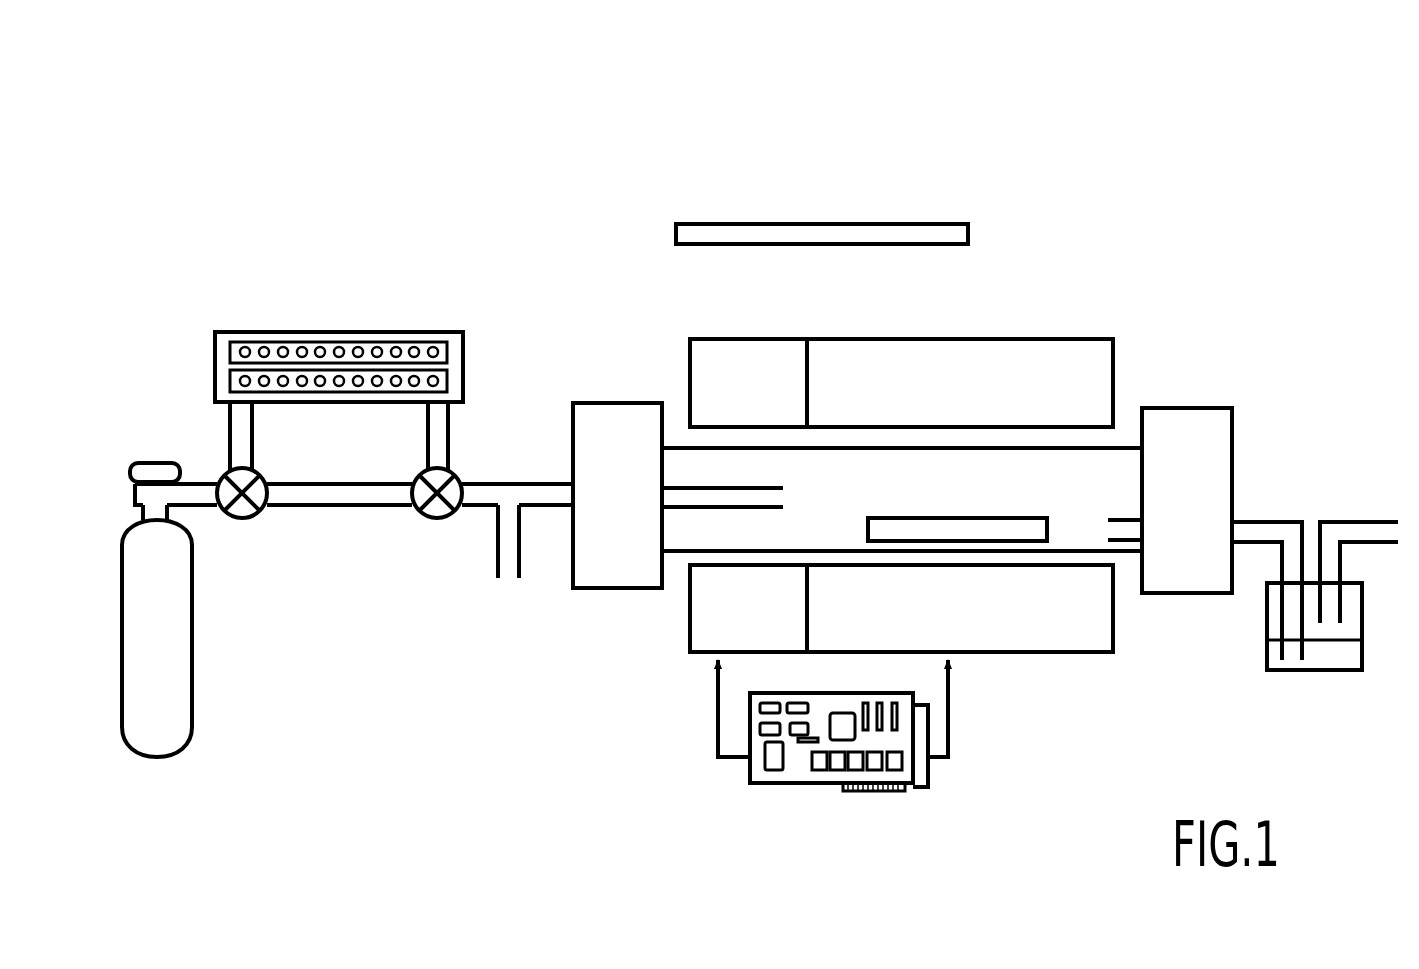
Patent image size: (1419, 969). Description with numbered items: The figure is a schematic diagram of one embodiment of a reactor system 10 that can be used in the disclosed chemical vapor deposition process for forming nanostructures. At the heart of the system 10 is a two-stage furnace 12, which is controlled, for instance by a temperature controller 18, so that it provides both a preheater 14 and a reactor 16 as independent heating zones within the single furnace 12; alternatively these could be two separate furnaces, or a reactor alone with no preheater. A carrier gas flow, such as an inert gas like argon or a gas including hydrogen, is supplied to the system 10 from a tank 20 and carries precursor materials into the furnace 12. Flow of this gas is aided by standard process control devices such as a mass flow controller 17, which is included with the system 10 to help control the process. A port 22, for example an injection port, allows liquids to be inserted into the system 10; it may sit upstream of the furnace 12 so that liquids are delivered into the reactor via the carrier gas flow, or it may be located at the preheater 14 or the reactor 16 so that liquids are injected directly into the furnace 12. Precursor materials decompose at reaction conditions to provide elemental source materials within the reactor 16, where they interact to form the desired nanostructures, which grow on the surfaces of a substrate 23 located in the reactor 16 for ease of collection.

The system 10 is at (453, 142).
The two-stage furnace 12 is at (832, 275).
The preheater 14 is at (668, 298).
The reactor 16 is at (1053, 305).
The mass flow controller 17 is at (333, 318).
The temperature controller 18 is at (913, 795).
The tank 20 is at (197, 692).
The port 22 is at (514, 588).
The substrate 23 is at (958, 517).